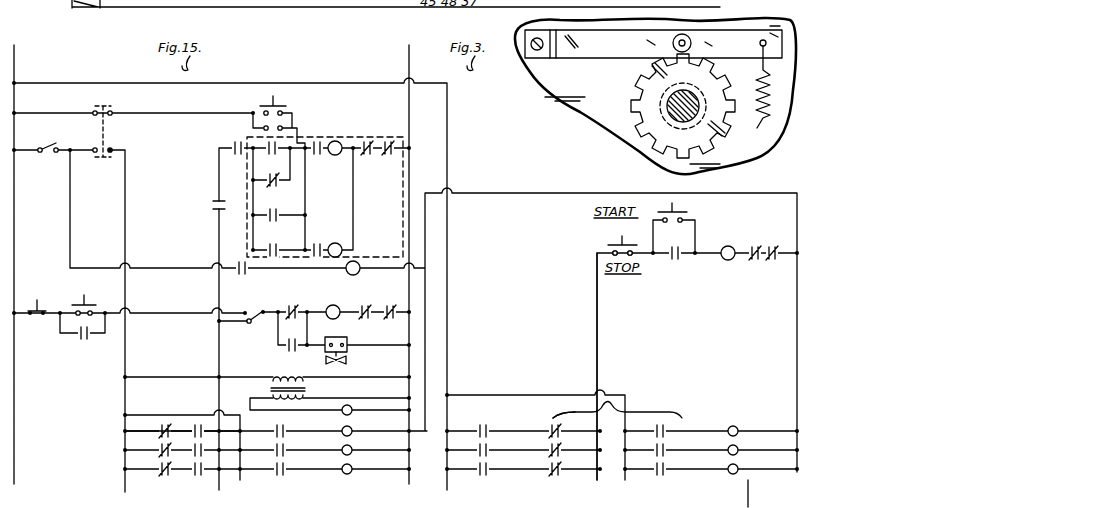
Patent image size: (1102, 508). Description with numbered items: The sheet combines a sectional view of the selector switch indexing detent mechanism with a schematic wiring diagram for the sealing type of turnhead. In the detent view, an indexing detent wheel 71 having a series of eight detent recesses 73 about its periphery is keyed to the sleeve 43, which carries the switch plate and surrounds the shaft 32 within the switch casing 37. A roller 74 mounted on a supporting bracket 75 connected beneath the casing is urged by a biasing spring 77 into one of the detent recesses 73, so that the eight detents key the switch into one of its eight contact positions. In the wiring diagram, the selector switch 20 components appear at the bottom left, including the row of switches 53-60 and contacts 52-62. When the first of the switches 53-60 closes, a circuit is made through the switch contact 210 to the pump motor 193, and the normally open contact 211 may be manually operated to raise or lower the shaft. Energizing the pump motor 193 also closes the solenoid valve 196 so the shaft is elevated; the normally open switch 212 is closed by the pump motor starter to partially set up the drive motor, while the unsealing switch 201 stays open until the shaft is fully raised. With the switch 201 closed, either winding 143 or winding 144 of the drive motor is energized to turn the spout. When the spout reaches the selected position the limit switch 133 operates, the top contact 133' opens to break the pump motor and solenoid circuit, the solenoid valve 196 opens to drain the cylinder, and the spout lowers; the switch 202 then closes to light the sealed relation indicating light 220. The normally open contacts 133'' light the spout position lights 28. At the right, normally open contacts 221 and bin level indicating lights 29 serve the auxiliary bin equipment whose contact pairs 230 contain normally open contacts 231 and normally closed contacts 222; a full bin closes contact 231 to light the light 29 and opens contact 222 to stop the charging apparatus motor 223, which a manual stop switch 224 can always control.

In FIG. 15, the unsealing switch 201 is at (218, 147).
In FIG. 15, the normally open switch 212 is at (213, 205).
In FIG. 15, the drive motor winding 143 is at (337, 156).
In FIG. 15, the drive motor winding 144 is at (334, 243).
In FIG. 15, the contact 211 is at (256, 308).
In FIG. 15, the switch 202 is at (246, 275).
In FIG. 15, the sealed relation indicating light 220 is at (350, 275).
In FIG. 15, the pump motor 193 is at (340, 304).
In FIG. 15, the switch contact 210 is at (251, 325).
In FIG. 15, the solenoid valve 196 is at (325, 350).
In FIG. 15, the top contact 133' is at (166, 412).
In FIG. 15, the limit switch 133 is at (114, 454).
In FIG. 15, the selector switch 20 is at (113, 461).
In FIG. 15, the selector switches 53-60 is at (203, 485).
In FIG. 15, the normally open contacts 133'' is at (261, 463).
In FIG. 15, the spout position lights 28 is at (352, 473).
In FIG. 15, the contacts 52-62 is at (504, 396).
In FIG. 15, the normally open contacts 221 is at (490, 482).
In FIG. 15, the normally closed switch contacts 222 is at (565, 478).
In FIG. 15, the normally open switch contacts 231 is at (663, 478).
In FIG. 15, the bin level indicating lights 29 is at (738, 450).
In FIG. 15, the contact pairs 230 is at (603, 412).
In FIG. 15, the manual stop switch 224 is at (645, 258).
In FIG. 15, the charging apparatus motor 223 is at (729, 262).
In FIG. 3, the casing 37 is at (560, 108).
In FIG. 3, the detent recesses 73 is at (647, 58).
In FIG. 3, the supporting bracket 75 is at (563, 57).
In FIG. 3, the roller 74 is at (692, 43).
In FIG. 3, the indexing detent wheel 71 is at (643, 120).
In FIG. 3, the sleeve 43 is at (667, 100).
In FIG. 3, the shaft 32 is at (717, 67).
In FIG. 3, the biasing spring 77 is at (764, 118).